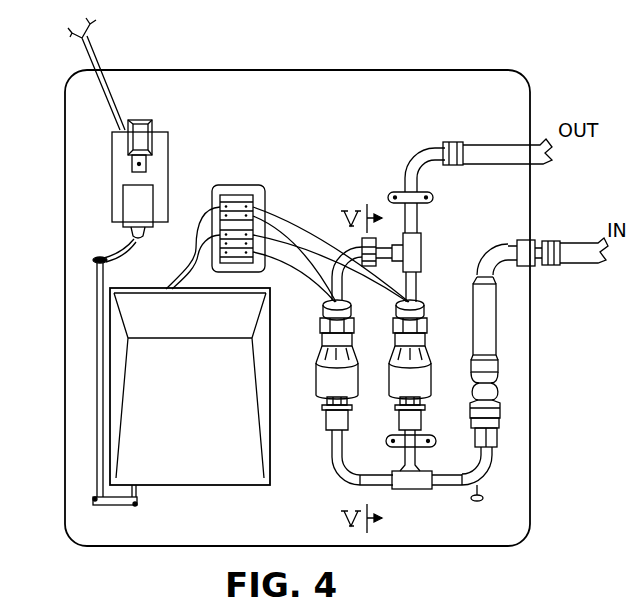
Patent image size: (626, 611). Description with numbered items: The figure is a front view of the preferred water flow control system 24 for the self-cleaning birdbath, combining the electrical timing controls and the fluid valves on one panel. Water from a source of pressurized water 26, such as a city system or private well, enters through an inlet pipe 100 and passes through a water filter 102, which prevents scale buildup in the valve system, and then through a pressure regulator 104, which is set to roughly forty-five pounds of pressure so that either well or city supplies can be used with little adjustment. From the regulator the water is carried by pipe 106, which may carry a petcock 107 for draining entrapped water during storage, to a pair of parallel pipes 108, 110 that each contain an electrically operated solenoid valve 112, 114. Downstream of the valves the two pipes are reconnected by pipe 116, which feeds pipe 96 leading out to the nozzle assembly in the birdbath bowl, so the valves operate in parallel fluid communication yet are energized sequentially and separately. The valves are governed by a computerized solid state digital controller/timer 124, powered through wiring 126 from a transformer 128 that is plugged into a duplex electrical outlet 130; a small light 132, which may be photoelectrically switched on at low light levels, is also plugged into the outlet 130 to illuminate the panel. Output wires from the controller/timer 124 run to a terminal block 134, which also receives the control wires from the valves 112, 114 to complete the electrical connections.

The water flow control system 24 is at (300, 70).
The source of pressurized water 26 is at (580, 246).
The pipe 96 is at (545, 160).
The inlet pipe 100 is at (481, 268).
The water filter 102 is at (498, 333).
The pressure regulator 104 is at (500, 407).
The pipe 106 is at (437, 488).
The petcock 107 is at (482, 501).
The pipe 108 is at (333, 450).
The pipe 110 is at (424, 436).
The solenoid valve 112 is at (318, 373).
The solenoid valve 114 is at (430, 367).
The pipe 116 is at (420, 242).
The controller/timer 124 is at (192, 428).
The wiring 126 is at (98, 410).
The transformer 128 is at (123, 202).
The duplex electrical outlet 130 is at (157, 132).
The light 132 is at (135, 120).
The terminal block 134 is at (230, 192).